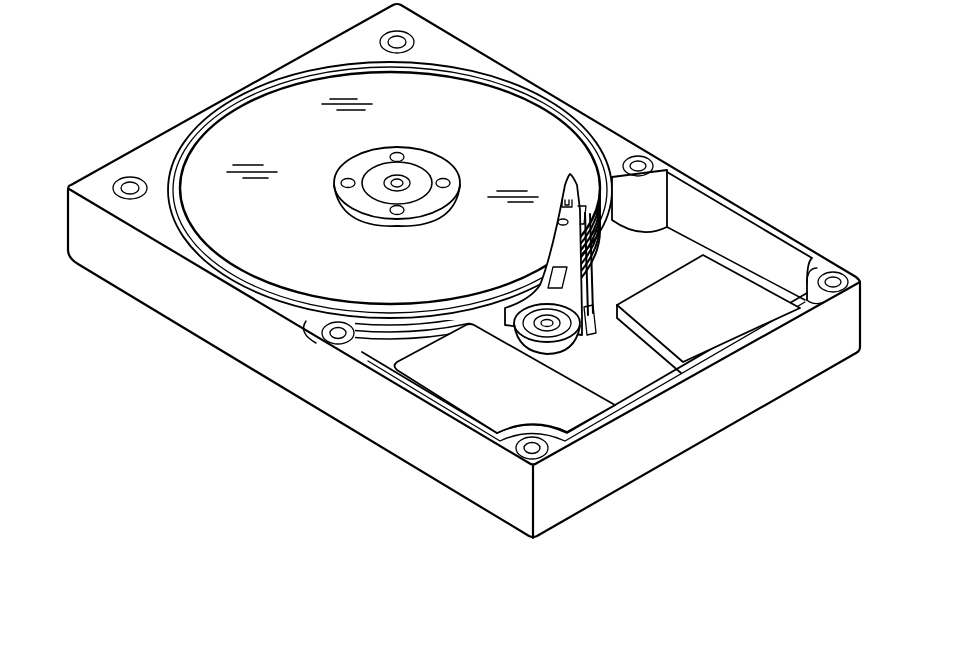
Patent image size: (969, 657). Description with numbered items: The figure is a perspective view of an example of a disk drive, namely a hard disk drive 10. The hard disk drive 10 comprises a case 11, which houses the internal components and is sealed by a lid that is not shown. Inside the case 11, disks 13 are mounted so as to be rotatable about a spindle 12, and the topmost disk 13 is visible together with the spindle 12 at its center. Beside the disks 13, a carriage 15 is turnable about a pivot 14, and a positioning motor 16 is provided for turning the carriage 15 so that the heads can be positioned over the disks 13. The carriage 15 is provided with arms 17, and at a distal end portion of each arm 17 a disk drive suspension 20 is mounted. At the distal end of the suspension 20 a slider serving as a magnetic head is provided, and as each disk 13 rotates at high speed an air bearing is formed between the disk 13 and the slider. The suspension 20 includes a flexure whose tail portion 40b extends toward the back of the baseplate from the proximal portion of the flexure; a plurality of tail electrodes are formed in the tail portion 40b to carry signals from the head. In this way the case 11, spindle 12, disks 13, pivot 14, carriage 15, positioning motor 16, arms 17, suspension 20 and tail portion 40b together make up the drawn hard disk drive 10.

The hard disk drive 10 is at (745, 90).
The case 11 is at (262, 366).
The spindle 12 is at (410, 176).
The disk 13 is at (510, 118).
The pivot 14 is at (556, 332).
The carriage 15 is at (607, 262).
The positioning motor 16 is at (460, 402).
The arm 17 is at (580, 217).
The disk drive suspension 20 is at (563, 302).
The tail portion 40b is at (603, 287).